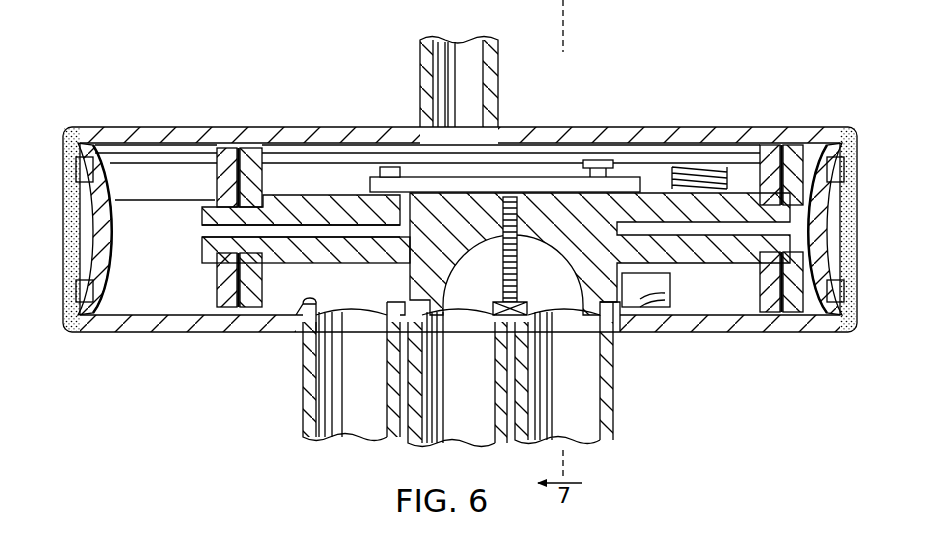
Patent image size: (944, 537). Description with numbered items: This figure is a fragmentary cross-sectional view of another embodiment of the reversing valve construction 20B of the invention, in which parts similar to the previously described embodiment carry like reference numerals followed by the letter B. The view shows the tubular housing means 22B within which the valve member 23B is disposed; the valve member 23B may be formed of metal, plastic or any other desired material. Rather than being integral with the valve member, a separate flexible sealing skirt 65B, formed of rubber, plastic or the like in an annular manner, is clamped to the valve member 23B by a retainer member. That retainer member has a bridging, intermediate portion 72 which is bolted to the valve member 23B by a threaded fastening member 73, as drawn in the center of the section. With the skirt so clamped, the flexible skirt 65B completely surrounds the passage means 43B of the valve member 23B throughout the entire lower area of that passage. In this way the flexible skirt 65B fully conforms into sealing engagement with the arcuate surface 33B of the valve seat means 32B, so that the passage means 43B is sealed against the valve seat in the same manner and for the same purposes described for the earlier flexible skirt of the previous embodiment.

The reversing valve construction 20B is at (740, 108).
The tubular housing means 22B is at (172, 127).
The valve member 23B is at (305, 186).
The threaded fastening member 73 is at (497, 205).
The passage means 43B is at (483, 243).
The bridging, intermediate portion 72 is at (518, 308).
The flexible sealing skirt 65B is at (661, 284).
The arcuate surface 33B is at (300, 318).
The valve seat means 32B is at (616, 320).